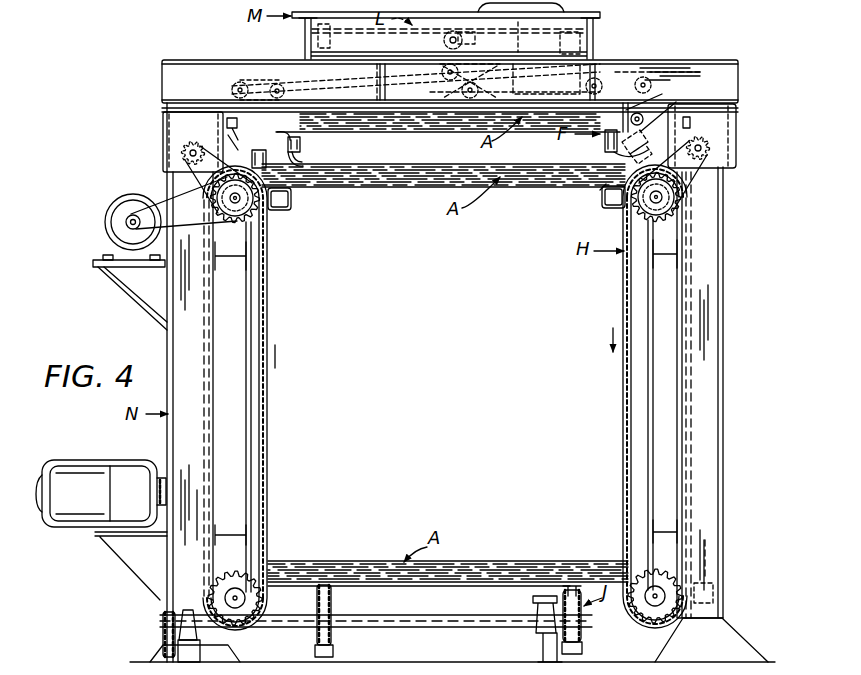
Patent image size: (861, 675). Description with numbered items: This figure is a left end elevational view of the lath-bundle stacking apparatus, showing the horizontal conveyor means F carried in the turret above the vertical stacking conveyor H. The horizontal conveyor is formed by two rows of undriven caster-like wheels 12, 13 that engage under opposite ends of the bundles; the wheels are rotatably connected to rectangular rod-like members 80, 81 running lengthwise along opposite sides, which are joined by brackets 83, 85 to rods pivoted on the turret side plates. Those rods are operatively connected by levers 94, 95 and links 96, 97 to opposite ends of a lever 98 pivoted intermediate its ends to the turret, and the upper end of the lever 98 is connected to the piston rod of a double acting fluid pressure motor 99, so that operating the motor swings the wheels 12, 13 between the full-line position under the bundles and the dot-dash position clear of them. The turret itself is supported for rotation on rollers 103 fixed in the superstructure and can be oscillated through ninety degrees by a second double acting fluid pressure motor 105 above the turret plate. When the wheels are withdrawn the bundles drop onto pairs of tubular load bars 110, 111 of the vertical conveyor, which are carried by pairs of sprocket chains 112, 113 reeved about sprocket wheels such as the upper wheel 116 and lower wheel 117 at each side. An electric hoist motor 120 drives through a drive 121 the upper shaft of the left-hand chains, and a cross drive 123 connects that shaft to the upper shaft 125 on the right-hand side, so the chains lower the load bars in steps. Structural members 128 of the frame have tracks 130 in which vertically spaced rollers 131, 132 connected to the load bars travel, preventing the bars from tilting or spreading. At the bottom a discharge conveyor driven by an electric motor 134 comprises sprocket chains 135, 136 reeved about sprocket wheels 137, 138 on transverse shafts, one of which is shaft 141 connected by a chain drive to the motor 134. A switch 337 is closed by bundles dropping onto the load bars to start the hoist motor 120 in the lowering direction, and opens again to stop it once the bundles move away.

The caster-like wheel 12 is at (605, 141).
The caster-like wheel 13 is at (301, 146).
The rectangular rod-like member 80 is at (633, 149).
The rectangular rod-like member 81 is at (303, 159).
The bracket 83 is at (655, 149).
The bracket 85 is at (238, 151).
The lever 94 is at (664, 98).
The lever 95 is at (232, 126).
The link 96 is at (643, 75).
The link 97 is at (303, 72).
The lever 98 is at (469, 81).
The double acting fluid pressure motor 99 is at (528, 64).
The rollers 103 is at (318, 46).
The double acting fluid pressure motor 105 is at (568, 41).
The tubular elevator load bar 110 is at (290, 213).
The tubular elevator load bar 111 is at (726, 569).
The sprocket chain 112 is at (627, 381).
The sprocket chain 113 is at (269, 433).
The sprocket wheel 116 is at (253, 233).
The sprocket wheel 117 is at (243, 573).
The electric hoist motor 120 is at (110, 214).
The drive 121 is at (163, 201).
The cross drive 123 is at (176, 128).
The upper shaft 125 is at (662, 197).
The structural member 128 is at (269, 381).
The groove or track 130 is at (630, 415).
The wheel or roller 131 is at (630, 233).
The wheel or roller 132 is at (604, 191).
The electric motor 134 is at (82, 469).
The sprocket chain 135 is at (582, 625).
The sprocket chain 136 is at (316, 651).
The sprocket wheel 137 is at (582, 647).
The sprocket wheel 138 is at (315, 631).
The transversely extending shaft 141 is at (406, 627).
The switch 337 is at (284, 167).